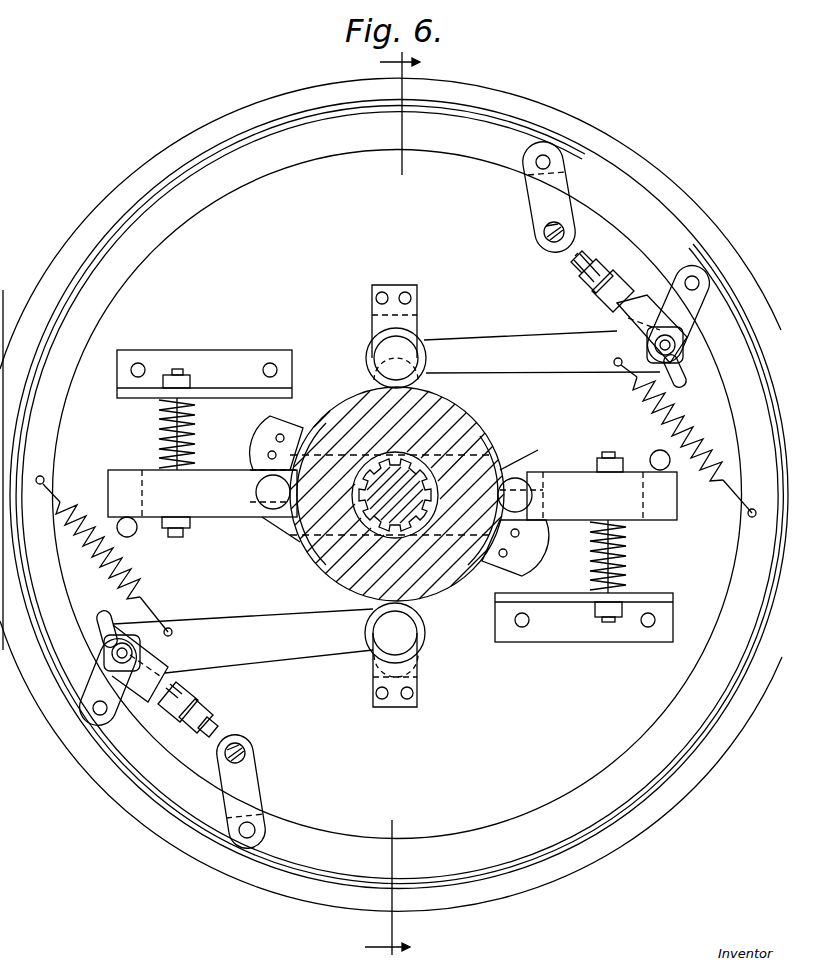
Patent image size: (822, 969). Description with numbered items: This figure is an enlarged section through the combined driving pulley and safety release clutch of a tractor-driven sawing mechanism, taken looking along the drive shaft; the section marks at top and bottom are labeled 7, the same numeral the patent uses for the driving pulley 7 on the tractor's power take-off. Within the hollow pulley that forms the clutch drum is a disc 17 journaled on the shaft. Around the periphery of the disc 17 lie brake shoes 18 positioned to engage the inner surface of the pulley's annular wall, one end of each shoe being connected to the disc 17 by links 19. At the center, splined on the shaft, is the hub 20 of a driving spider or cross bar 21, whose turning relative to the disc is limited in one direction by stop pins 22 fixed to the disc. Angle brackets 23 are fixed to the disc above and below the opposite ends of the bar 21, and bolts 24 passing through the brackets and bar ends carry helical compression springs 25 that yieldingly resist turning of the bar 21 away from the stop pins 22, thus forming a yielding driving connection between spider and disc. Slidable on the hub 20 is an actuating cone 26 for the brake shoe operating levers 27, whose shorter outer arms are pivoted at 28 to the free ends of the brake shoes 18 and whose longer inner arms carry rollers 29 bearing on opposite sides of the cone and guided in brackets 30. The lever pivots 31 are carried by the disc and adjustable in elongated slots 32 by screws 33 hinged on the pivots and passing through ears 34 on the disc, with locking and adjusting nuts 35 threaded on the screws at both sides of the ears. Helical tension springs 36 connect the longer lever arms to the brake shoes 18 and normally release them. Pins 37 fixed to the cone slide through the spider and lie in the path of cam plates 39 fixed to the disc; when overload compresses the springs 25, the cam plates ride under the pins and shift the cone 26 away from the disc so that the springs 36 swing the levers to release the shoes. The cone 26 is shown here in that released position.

The driving pulley 7 is at (392, 505).
The disc 17 is at (397, 494).
The brake shoes 18 is at (182, 208).
The links 19 is at (535, 205).
The hub 20 is at (385, 455).
The driving spider or cross bar 21 is at (550, 474).
The stop pins 22 is at (135, 537).
The angle brackets 23 is at (218, 365).
The bolts 24 is at (177, 370).
The helical compression springs 25 is at (160, 420).
The actuating cone 26 is at (483, 427).
The brake shoe operating levers 27 is at (495, 352).
The pivots 28 is at (100, 707).
The rollers 29 is at (422, 638).
The brackets 30 is at (375, 672).
The pivots 31 is at (112, 648).
The elongated slots 32 is at (106, 610).
The screws 33 is at (152, 712).
The ears 34 is at (205, 692).
The locking and adjusting nuts 35 is at (190, 742).
The helical tension springs 36 is at (142, 581).
The pins 37 is at (265, 520).
The cam plates 39 is at (263, 432).